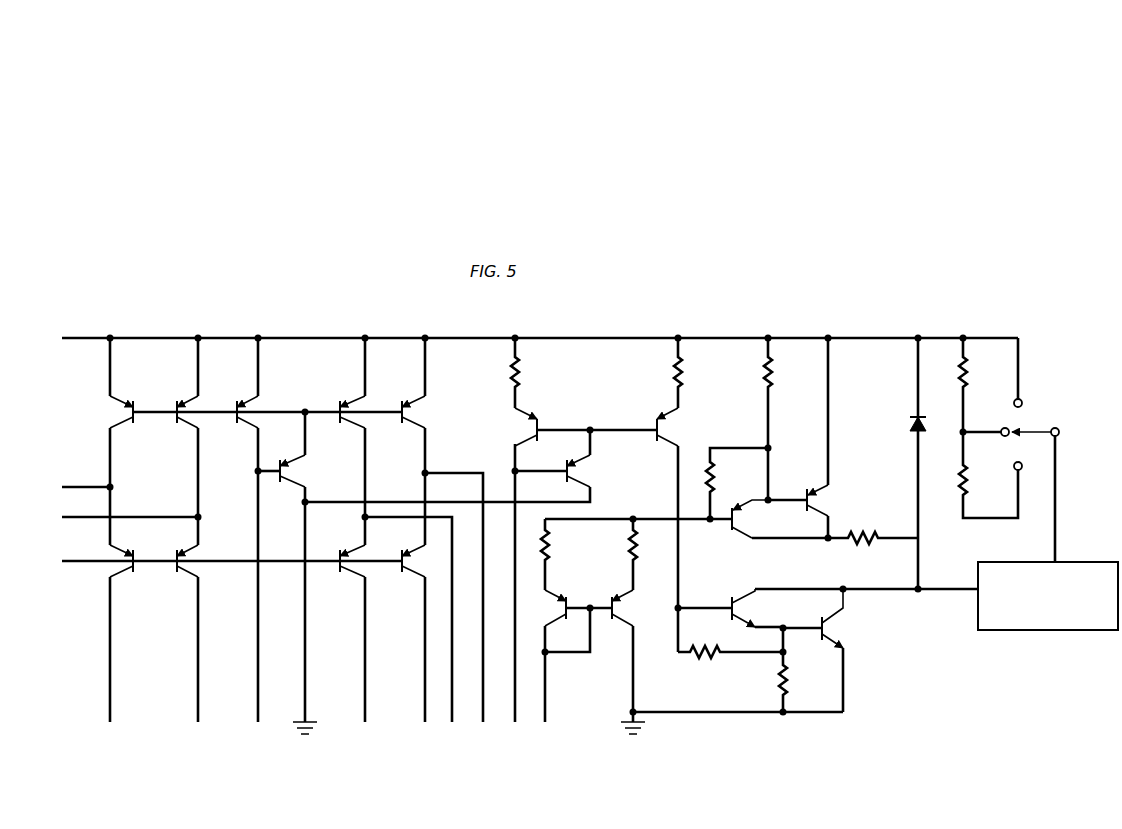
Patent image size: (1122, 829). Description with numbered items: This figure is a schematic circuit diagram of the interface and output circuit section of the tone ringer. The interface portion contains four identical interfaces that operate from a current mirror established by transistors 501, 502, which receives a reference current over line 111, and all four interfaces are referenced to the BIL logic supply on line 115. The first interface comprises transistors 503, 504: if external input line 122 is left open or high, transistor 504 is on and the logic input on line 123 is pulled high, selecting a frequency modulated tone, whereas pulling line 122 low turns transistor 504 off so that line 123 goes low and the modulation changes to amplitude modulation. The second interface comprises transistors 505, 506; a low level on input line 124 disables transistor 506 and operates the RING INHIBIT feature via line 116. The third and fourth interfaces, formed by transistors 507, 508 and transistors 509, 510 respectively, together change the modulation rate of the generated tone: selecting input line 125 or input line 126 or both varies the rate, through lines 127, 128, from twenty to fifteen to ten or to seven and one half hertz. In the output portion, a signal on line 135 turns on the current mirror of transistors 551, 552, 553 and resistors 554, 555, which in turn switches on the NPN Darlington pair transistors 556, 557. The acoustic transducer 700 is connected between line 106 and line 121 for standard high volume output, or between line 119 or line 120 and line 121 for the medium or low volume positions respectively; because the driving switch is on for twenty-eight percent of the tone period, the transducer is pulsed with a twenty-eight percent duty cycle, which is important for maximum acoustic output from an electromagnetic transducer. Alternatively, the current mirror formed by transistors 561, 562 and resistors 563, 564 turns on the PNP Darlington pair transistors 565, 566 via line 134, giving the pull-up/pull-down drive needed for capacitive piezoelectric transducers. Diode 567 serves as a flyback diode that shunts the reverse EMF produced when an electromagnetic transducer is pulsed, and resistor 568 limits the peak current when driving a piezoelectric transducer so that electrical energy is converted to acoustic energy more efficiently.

The line 106 is at (540, 328).
The line 115 is at (232, 550).
The external input line 122 is at (86, 476).
The input line 124 is at (130, 506).
The line 123 is at (111, 737).
The line 116 is at (201, 737).
The line 111 is at (261, 737).
The line 127 is at (367, 737).
The line 128 is at (425, 737).
The input line 125 is at (418, 632).
The input line 126 is at (464, 610).
The line 135 is at (518, 595).
The line 134 is at (548, 737).
The transistor 501 is at (304, 573).
The transistor 502 is at (265, 530).
The transistor 503 is at (133, 441).
The transistor 504 is at (134, 633).
The transistor 505 is at (205, 441).
The transistor 506 is at (205, 633).
The transistor 507 is at (369, 441).
The transistor 508 is at (340, 633).
The transistor 509 is at (431, 441).
The transistor 510 is at (401, 633).
The transistor 551 is at (690, 526).
The transistor 552 is at (586, 423).
The transistor 553 is at (470, 466).
The resistor 554 is at (698, 373).
The resistor 555 is at (536, 373).
The NPN Darlington pair transistor 556 is at (730, 601).
The NPN Darlington pair transistor 557 is at (836, 650).
The transistor 561 is at (640, 662).
The transistor 562 is at (578, 656).
The resistor 563 is at (564, 554).
The resistor 564 is at (652, 554).
The PNP Darlington pair transistor 565 is at (780, 531).
The PNP Darlington pair transistor 566 is at (820, 438).
The diode 567 is at (902, 463).
The resistor 568 is at (873, 548).
The line 119 is at (975, 404).
The line 120 is at (1016, 497).
The line 121 is at (922, 594).
The acoustic transducer 700 is at (1090, 562).